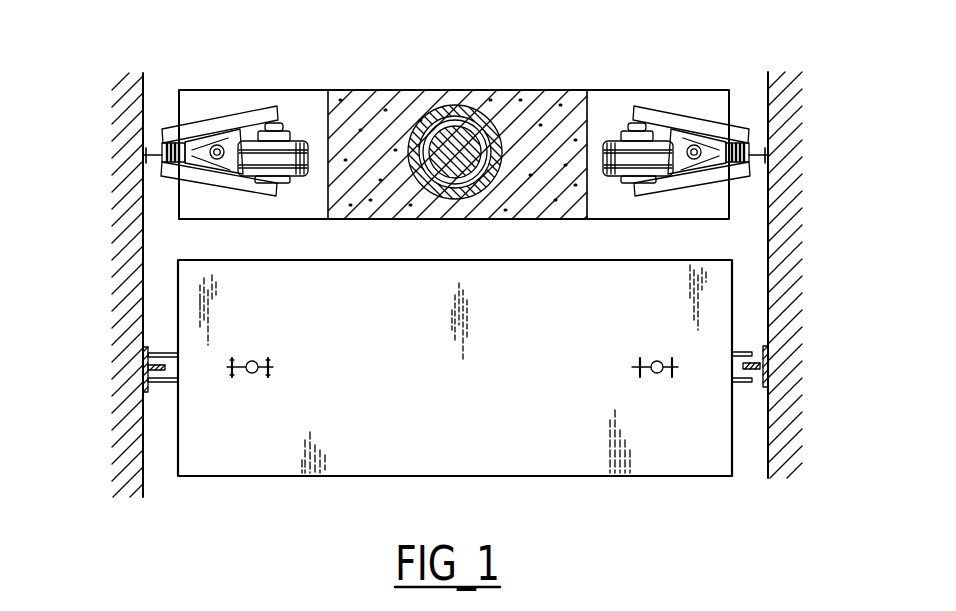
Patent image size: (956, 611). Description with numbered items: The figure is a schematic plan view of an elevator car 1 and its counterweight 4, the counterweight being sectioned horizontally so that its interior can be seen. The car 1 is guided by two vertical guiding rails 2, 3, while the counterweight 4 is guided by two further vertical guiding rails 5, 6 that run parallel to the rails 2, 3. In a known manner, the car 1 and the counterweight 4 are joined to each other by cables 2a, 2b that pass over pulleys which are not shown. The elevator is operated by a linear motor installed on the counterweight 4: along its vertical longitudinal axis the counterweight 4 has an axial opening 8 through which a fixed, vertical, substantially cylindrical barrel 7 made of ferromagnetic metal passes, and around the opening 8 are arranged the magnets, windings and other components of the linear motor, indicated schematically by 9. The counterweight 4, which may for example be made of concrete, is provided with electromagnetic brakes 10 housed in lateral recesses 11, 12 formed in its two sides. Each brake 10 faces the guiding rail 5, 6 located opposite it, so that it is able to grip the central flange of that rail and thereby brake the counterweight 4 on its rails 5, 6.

The car 1 is at (237, 478).
The vertical guiding rail 2 is at (149, 392).
The vertical guiding rail 3 is at (758, 387).
The cable 2a is at (255, 373).
The cable 2b is at (652, 362).
The counterweight 4 is at (350, 90).
The vertical guiding rail 5 is at (146, 148).
The vertical guiding rail 6 is at (762, 142).
The barrel 7 is at (454, 142).
The axial opening 8 is at (427, 147).
The linear motor components 9 is at (484, 126).
The electromagnetic brake 10 is at (226, 114).
The lateral recess 11 is at (305, 203).
The lateral recess 12 is at (610, 203).